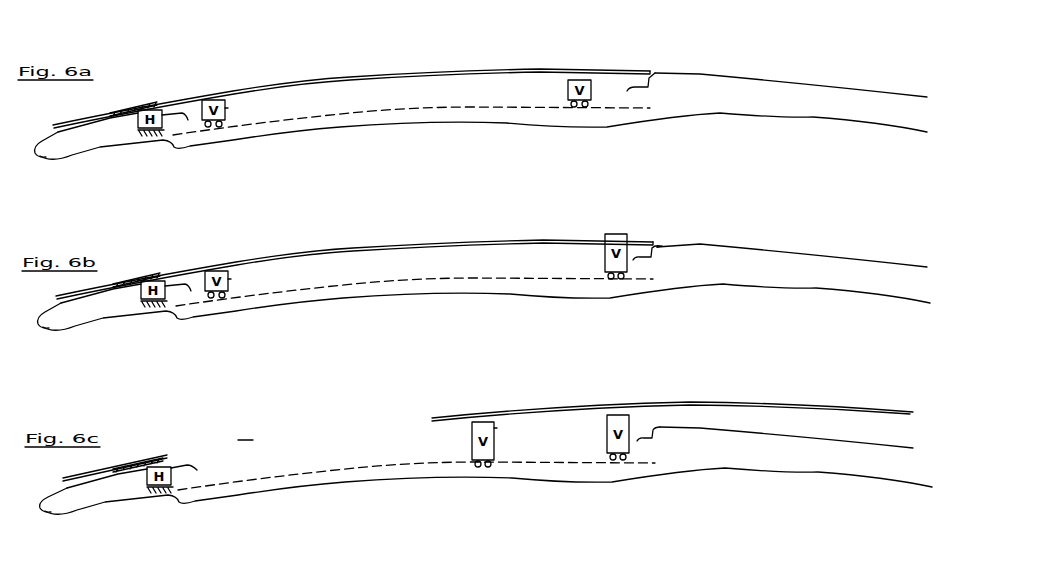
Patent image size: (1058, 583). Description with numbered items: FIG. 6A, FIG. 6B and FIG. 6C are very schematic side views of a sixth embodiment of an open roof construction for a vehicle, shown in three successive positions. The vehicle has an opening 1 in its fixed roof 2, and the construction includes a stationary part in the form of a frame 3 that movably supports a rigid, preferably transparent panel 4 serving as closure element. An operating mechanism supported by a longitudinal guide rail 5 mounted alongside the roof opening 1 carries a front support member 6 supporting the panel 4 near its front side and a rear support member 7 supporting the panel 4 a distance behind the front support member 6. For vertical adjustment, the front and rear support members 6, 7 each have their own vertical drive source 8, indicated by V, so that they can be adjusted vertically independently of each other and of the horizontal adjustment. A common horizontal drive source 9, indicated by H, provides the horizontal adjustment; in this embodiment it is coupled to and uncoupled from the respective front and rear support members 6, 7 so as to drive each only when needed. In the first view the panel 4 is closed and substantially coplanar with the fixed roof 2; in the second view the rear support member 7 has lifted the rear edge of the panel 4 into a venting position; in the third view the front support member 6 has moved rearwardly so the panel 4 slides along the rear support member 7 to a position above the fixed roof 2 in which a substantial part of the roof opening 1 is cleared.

In FIG. 6B, the roof opening 1 is at (648, 240).
In FIG. 6C, the roof opening 1 is at (247, 438).
In FIG. 6A, the fixed roof 2 is at (123, 107).
In FIG. 6C, the fixed roof 2 is at (913, 448).
In FIG. 6A, the frame 3 is at (113, 143).
In FIG. 6B, the frame 3 is at (133, 317).
In FIG. 6C, the frame 3 is at (192, 505).
In FIG. 6A, the panel 4 is at (410, 75).
In FIG. 6B, the panel 4 is at (428, 232).
In FIG. 6C, the panel 4 is at (798, 402).
In FIG. 6A, the guide rail 5 is at (475, 87).
In FIG. 6B, the guide rail 5 is at (368, 280).
In FIG. 6C, the guide rail 5 is at (377, 457).
In FIG. 6A, the front support member 6 is at (227, 108).
In FIG. 6B, the front support member 6 is at (230, 280).
In FIG. 6C, the front support member 6 is at (495, 428).
In FIG. 6A, the rear support member 7 is at (593, 88).
In FIG. 6B, the rear support member 7 is at (628, 238).
In FIG. 6C, the rear support member 7 is at (640, 427).
In FIG. 6A, the vertical drive source 8 is at (216, 110).
In FIG. 6B, the vertical drive source 8 is at (218, 281).
In FIG. 6C, the vertical drive source 8 is at (486, 435).
In FIG. 6A, the horizontal drive source 9 is at (160, 110).
In FIG. 6B, the horizontal drive source 9 is at (163, 282).
In FIG. 6C, the horizontal drive source 9 is at (170, 467).